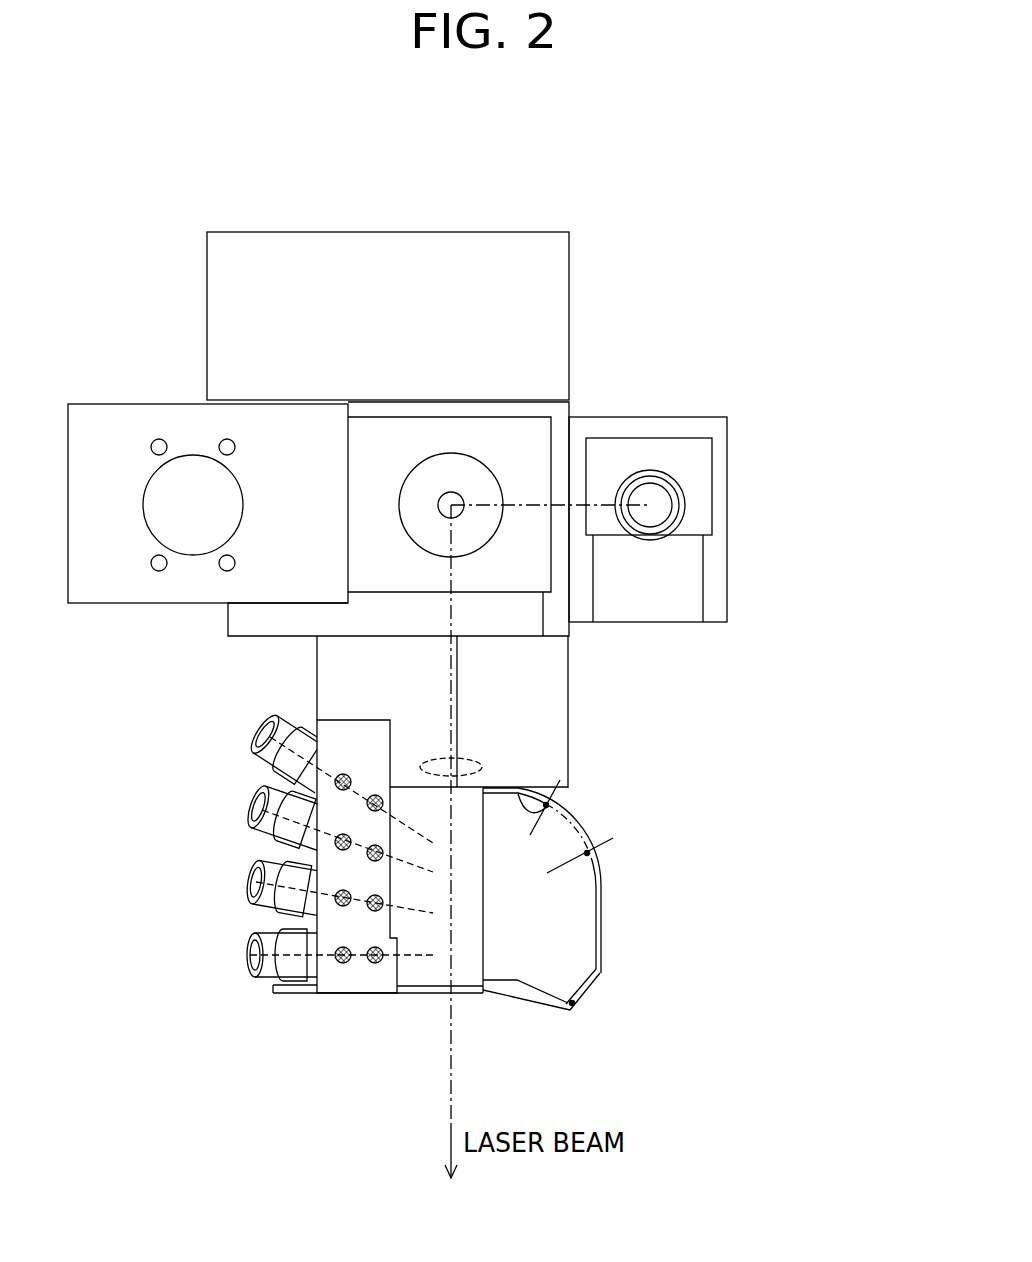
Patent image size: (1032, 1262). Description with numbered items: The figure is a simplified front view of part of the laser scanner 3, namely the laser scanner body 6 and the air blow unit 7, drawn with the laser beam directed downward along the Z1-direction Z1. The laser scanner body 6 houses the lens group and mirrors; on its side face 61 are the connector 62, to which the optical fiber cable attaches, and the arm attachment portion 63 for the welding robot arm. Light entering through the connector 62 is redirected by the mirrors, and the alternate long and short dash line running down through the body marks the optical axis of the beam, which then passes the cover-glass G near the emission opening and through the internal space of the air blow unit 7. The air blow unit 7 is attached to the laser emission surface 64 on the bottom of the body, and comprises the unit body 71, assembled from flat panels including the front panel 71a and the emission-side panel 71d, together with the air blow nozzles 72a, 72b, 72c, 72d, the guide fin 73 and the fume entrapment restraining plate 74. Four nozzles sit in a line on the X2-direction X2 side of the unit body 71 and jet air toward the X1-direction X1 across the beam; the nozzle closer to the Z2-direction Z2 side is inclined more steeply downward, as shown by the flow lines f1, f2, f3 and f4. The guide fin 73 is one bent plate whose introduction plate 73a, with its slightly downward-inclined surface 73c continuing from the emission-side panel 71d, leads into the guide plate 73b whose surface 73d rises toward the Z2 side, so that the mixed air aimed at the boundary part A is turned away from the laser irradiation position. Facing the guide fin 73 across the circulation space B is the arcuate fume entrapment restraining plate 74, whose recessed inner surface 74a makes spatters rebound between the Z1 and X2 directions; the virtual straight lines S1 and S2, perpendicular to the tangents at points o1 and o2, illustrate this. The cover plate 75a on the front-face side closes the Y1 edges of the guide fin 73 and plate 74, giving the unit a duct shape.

The laser scanner 3 is at (154, 147).
The laser scanner body 6 is at (413, 228).
The side face 61 is at (680, 568).
The connector 62 is at (683, 480).
The arm attachment portion 63 is at (110, 422).
The laser emission surface 64 is at (556, 802).
The air blow unit 7 is at (407, 997).
The unit body 71 is at (464, 962).
The front panel 71a is at (425, 938).
The emission-side panel 71d is at (458, 997).
The first air blow nozzle 72a is at (252, 967).
The second air blow nozzle 72b is at (252, 887).
The third air blow nozzle 72c is at (253, 807).
The fourth air blow nozzle 72d is at (263, 733).
The guide fin 73 is at (553, 1014).
The introduction plate 73a is at (527, 1010).
The guide plate 73b is at (585, 993).
The surface of the introduction plate 73c is at (533, 983).
The surface of the guide plate 73d is at (602, 967).
The fume entrapment restraining plate 74 is at (603, 868).
The inner surface 74a is at (575, 828).
The cover plate 75a is at (582, 940).
The flow-line direction of air from first air blow nozzle f1 is at (262, 985).
The flow-line direction of air from second air blow nozzle f2 is at (258, 915).
The flow-line direction of air from third air blow nozzle f3 is at (260, 843).
The flow-line direction of air from fourth air blow nozzle f4 is at (265, 768).
The cover-glass G is at (473, 760).
The point O1 o1 is at (547, 800).
The point O2 o2 is at (586, 840).
The virtual straight line S1 is at (535, 815).
The virtual straight line S2 is at (548, 870).
The boundary part A is at (571, 1000).
The circulation space B is at (543, 893).
The X1-direction X1 is at (797, 1067).
The X2-direction X2 is at (797, 1067).
The Z1-direction Z1 is at (797, 1067).
The Z2-direction Z2 is at (797, 1067).